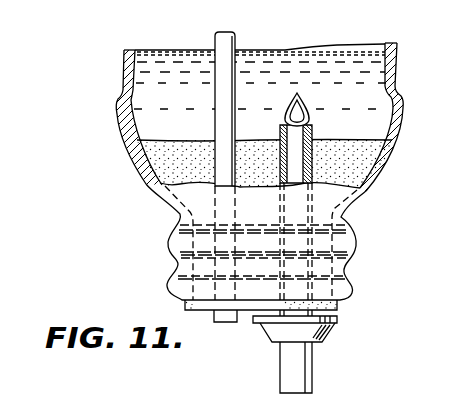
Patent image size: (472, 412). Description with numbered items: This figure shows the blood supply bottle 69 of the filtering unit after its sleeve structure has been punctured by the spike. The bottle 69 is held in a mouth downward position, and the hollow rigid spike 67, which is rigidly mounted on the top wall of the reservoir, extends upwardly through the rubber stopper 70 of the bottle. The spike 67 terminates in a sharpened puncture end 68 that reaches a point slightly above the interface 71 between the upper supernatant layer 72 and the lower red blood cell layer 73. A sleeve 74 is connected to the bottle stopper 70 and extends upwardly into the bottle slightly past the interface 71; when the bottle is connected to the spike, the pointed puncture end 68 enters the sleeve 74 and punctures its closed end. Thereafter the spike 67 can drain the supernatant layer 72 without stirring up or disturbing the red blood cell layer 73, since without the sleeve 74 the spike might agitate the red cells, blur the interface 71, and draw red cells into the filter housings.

The hollow rigid spike 67 is at (328, 332).
The sharpened puncture end 68 is at (302, 99).
The blood supply bottle 69 is at (143, 181).
The rubber stopper 70 is at (337, 306).
The interface 71 is at (368, 139).
The supernatant layer 72 is at (170, 61).
The red blood cell layer 73 is at (358, 168).
The sleeve 74 is at (277, 145).